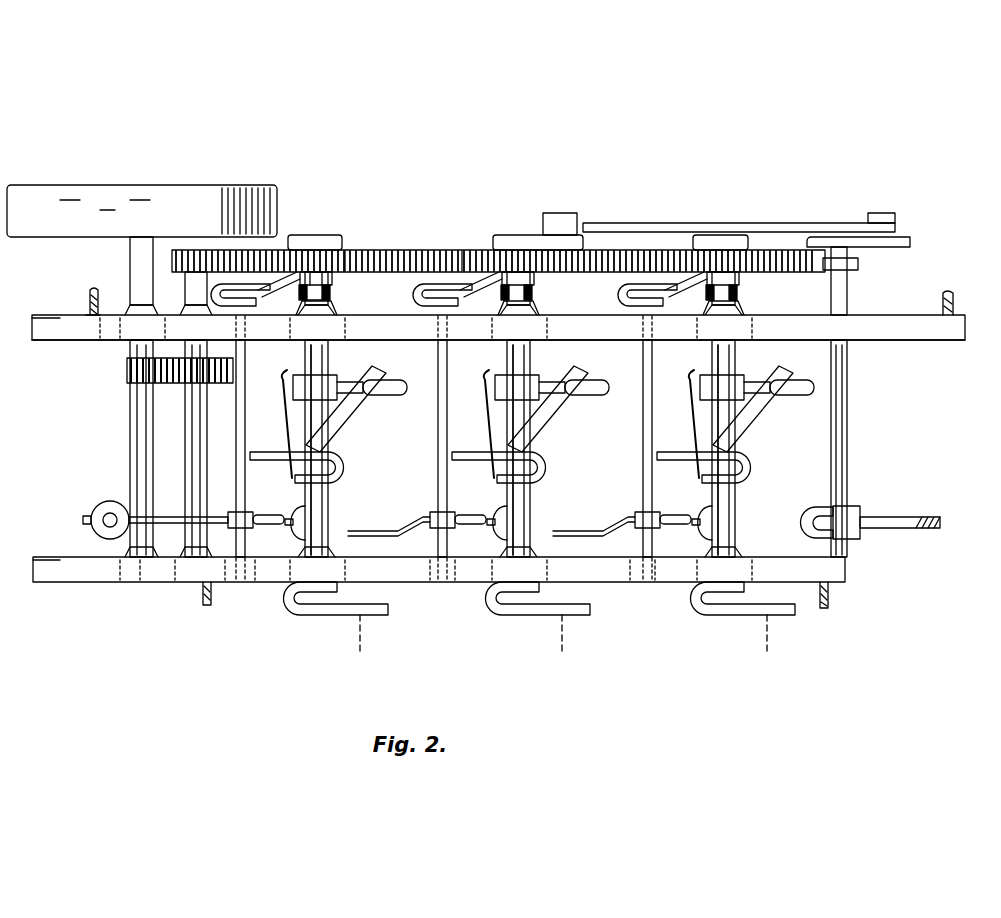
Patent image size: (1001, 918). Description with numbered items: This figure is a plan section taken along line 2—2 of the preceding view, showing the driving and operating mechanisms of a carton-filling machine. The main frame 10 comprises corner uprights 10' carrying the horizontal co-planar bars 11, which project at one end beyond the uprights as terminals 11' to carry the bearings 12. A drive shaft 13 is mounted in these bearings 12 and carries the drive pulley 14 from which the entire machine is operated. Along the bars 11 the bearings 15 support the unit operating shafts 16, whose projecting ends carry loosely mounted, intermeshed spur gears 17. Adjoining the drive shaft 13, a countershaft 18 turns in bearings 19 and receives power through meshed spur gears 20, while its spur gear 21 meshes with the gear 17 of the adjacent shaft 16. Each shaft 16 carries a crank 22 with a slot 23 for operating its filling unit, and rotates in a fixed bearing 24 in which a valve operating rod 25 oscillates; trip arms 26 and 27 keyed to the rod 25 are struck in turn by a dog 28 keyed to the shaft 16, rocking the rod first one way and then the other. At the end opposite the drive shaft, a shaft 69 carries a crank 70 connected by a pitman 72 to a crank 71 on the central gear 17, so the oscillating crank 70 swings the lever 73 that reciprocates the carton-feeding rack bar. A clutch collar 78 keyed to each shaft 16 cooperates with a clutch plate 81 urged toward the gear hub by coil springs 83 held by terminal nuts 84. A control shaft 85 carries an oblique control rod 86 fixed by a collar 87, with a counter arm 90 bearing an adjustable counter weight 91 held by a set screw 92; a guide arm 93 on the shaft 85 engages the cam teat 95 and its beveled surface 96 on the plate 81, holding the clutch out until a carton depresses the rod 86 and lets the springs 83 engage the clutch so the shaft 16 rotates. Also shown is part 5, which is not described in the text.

The line 2— 2 is at (365, 253).
The post 5 is at (96, 538).
The main frame 10 is at (498, 353).
The corner uprights 10' is at (512, 450).
The horizontal co-planar bars 11 is at (501, 434).
The projecting terminals of the bars 11' is at (35, 466).
The bearings 12 is at (100, 320).
The drive shaft 13 is at (140, 440).
The drive pulley 14 is at (190, 200).
The bearings 15 is at (345, 326).
The unit operating shaft 16 is at (328, 360).
The spur gears 17 is at (347, 250).
The countershaft 18 is at (190, 455).
The bearings 19 is at (183, 322).
The spur gears 20 is at (200, 372).
The spur gear 21 is at (183, 250).
The crank 22 is at (325, 616).
The slot 23 is at (360, 652).
The fixed bearing 24 is at (295, 380).
The valve operating rod 25 is at (387, 397).
The trip arm 26 is at (345, 422).
The trip arm 27 is at (286, 412).
The dog 28 is at (290, 470).
The shaft 69 is at (848, 432).
The crank 70 is at (900, 236).
The crank 71 is at (562, 235).
The pitman 72 is at (742, 223).
The lever 73 is at (932, 531).
The clutch collar 78 is at (298, 237).
The clutch plate 81 is at (322, 272).
The coil springs 83 is at (299, 292).
The terminal nuts 84 is at (316, 307).
The control shaft 85 is at (240, 583).
The control rod 86 is at (268, 524).
The collar 87 is at (235, 512).
The counter arm 90 is at (165, 518).
The counter weight 91 is at (100, 528).
The set screw 92 is at (108, 518).
The guide arm 93 is at (262, 290).
The cam teat 95 is at (318, 283).
The beveled surface 96 is at (312, 278).